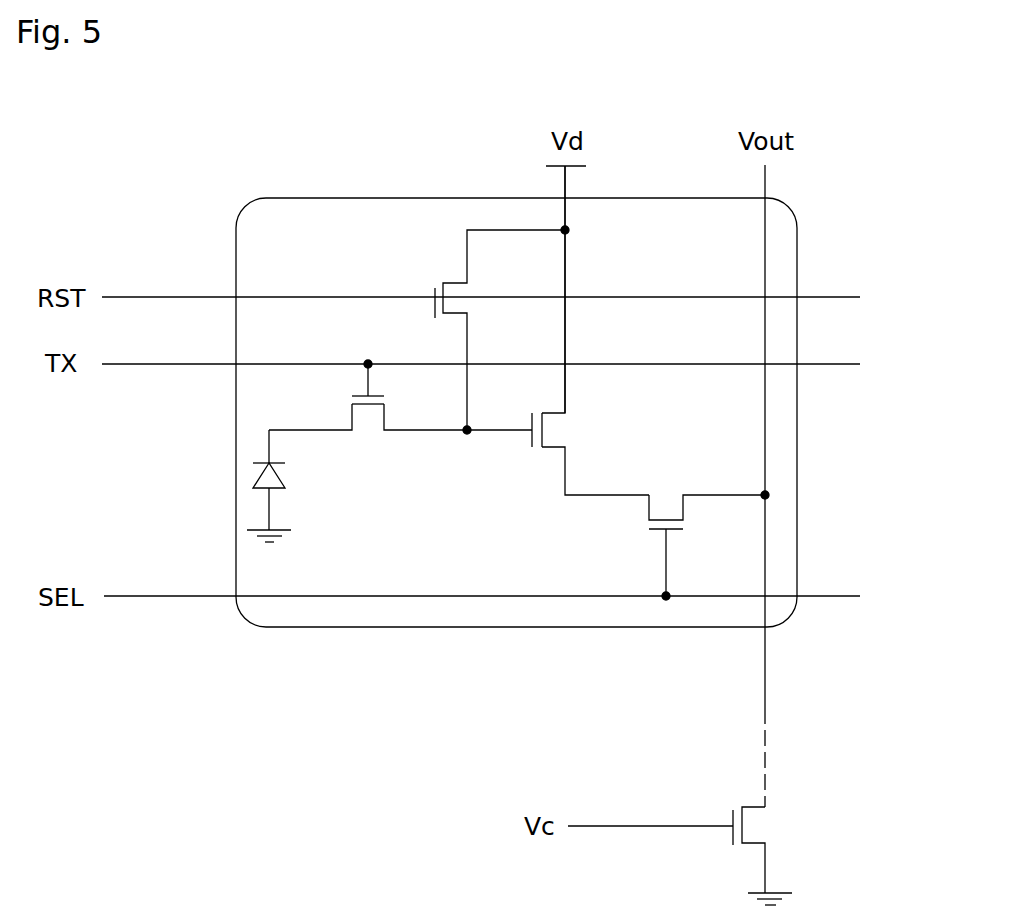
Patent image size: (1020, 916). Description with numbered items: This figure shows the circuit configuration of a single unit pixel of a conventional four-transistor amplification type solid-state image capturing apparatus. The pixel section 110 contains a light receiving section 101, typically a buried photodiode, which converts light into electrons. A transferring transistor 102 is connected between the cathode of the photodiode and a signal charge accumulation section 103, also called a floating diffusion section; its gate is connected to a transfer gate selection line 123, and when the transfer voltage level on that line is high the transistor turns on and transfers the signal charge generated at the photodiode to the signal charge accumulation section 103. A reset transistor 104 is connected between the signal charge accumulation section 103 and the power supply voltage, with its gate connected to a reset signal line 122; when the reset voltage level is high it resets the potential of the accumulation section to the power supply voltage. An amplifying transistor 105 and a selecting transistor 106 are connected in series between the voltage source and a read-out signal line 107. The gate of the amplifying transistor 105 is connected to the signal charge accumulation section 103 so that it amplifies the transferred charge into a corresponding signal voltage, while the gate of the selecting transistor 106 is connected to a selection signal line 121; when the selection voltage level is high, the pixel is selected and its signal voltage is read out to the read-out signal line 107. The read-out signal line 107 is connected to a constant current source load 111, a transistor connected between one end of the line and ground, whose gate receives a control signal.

The light receiving section 101 is at (275, 476).
The transferring transistor 102 is at (356, 428).
The signal charge accumulation section 103 is at (467, 436).
The reset transistor 104 is at (453, 284).
The amplifying transistor 105 is at (556, 434).
The selecting transistor 106 is at (646, 510).
The read-out signal line 107 is at (763, 460).
The pixel section 110 is at (328, 212).
The constant current source load 111 is at (756, 826).
The selection signal line 121 is at (846, 586).
The reset signal line 122 is at (846, 287).
The transfer gate selection line 123 is at (846, 354).